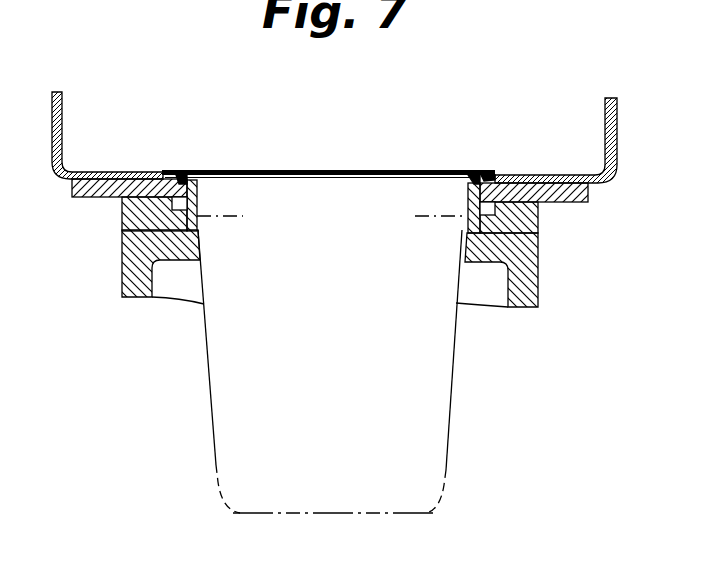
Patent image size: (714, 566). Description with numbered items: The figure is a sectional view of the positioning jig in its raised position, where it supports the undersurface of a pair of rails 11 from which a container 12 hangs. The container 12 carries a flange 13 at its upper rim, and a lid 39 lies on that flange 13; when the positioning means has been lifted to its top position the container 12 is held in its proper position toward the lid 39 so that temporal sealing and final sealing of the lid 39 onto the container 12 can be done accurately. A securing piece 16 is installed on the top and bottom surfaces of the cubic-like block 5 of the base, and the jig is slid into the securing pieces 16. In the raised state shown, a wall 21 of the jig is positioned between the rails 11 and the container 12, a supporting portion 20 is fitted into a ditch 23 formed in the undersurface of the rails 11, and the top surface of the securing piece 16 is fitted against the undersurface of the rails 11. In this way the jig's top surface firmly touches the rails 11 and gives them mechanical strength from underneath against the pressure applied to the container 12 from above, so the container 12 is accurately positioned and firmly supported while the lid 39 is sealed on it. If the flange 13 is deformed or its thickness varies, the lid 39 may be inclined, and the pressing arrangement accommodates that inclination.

The block 5 is at (538, 282).
The rails 11 is at (117, 173).
The container 12 is at (210, 402).
The flange 13 is at (475, 168).
The securing piece 16 is at (122, 220).
The supporting portion 20 is at (177, 170).
The wall 21 is at (206, 176).
The ditch 23 is at (484, 173).
The lid 39 is at (348, 167).